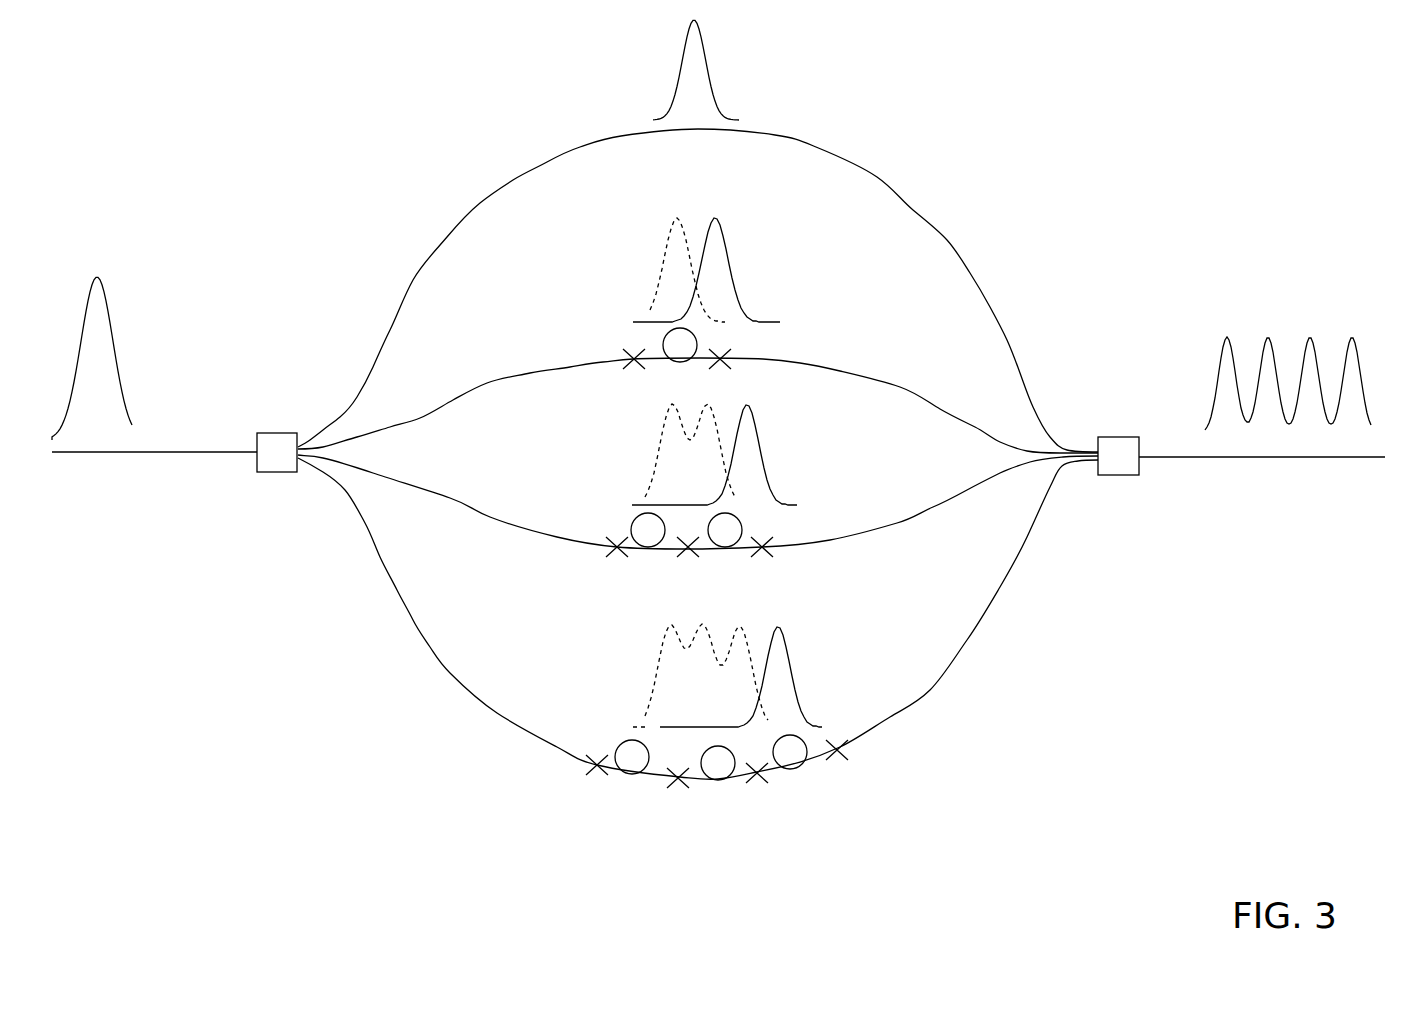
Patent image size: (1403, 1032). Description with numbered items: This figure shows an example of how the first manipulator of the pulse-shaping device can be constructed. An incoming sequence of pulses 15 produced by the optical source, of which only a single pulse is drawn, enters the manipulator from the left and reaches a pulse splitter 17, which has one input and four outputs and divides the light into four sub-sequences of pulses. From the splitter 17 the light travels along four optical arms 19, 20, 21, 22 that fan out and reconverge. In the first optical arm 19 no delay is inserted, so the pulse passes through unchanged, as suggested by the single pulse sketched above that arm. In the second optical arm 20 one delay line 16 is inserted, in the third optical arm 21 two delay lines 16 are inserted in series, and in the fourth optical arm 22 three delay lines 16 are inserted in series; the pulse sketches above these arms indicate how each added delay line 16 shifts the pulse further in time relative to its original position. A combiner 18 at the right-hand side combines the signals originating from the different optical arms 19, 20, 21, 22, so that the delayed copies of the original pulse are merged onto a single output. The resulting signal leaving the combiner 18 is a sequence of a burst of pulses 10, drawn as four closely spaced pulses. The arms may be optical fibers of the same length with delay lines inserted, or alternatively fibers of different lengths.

The burst of pulses 10 is at (1283, 333).
The sequence of pulses 15 is at (105, 268).
The delay line 16 is at (710, 343).
The pulse splitter 17 is at (283, 475).
The combiner 18 is at (1126, 477).
The first optical arm 19 is at (447, 243).
The second optical arm 20 is at (530, 373).
The third optical arm 21 is at (552, 537).
The fourth optical arm 22 is at (500, 713).